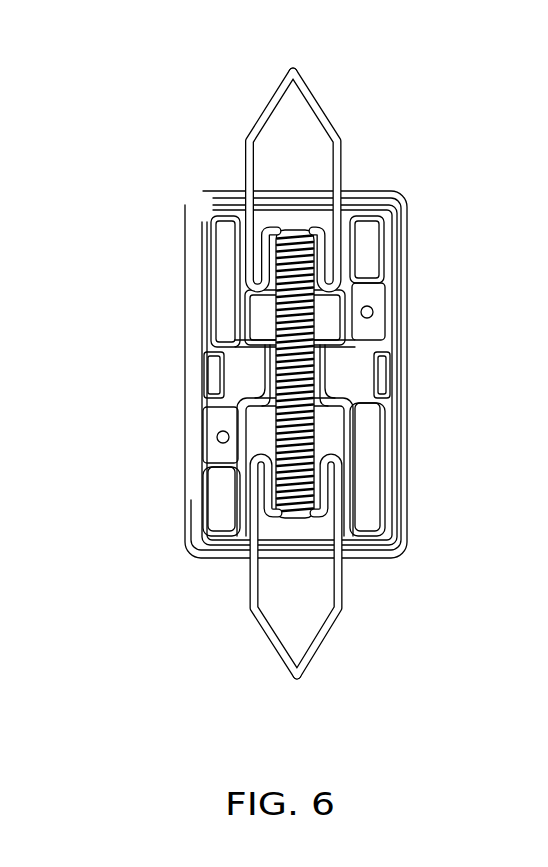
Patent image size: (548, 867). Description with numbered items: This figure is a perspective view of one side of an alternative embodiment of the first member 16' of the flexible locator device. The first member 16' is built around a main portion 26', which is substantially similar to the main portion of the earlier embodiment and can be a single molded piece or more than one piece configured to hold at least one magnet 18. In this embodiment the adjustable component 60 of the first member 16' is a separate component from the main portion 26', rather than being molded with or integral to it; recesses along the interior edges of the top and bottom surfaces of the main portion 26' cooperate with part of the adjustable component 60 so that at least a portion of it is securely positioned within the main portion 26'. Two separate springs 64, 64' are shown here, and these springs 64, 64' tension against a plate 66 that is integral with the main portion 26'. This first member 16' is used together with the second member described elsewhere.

The first member 16' is at (272, 341).
The magnet 18 is at (305, 198).
The main portion 26' is at (231, 375).
The adjustable component 60 is at (320, 107).
The spring 64 is at (422, 311).
The spring 64' is at (350, 467).
The plate 66 is at (318, 373).